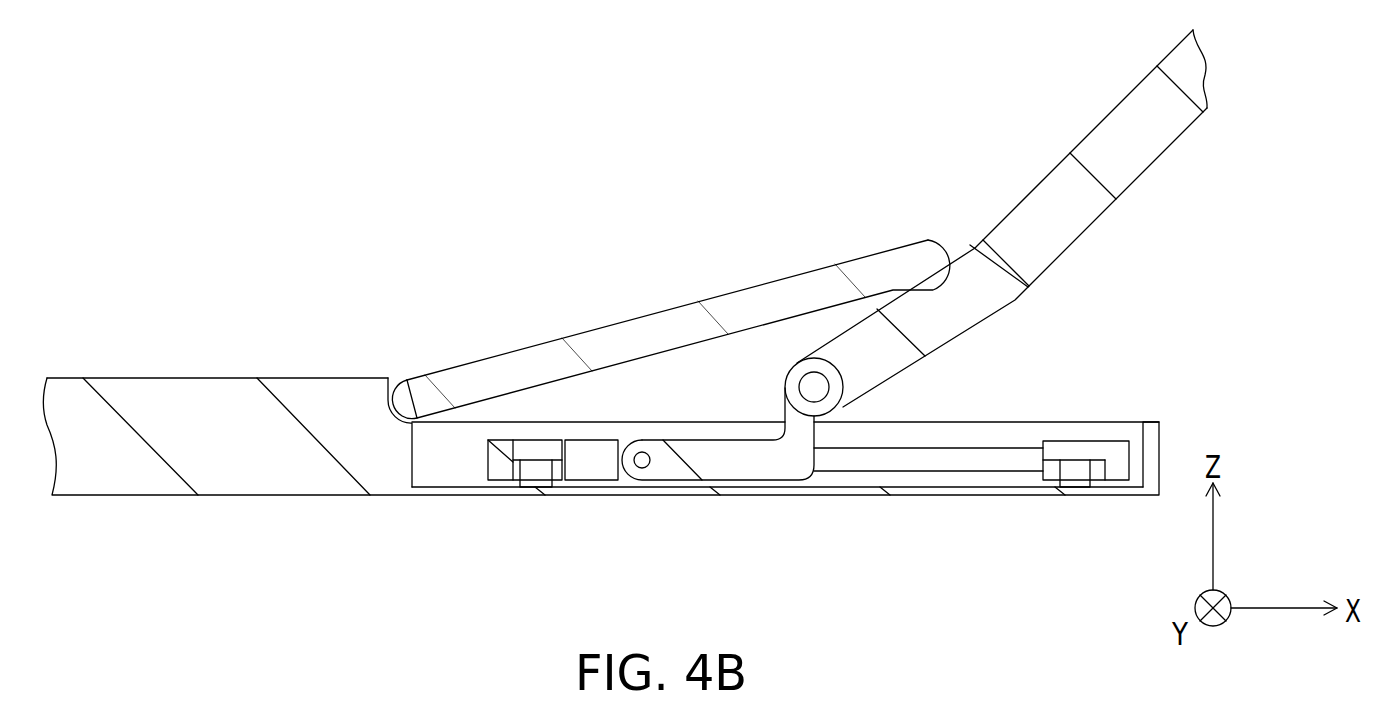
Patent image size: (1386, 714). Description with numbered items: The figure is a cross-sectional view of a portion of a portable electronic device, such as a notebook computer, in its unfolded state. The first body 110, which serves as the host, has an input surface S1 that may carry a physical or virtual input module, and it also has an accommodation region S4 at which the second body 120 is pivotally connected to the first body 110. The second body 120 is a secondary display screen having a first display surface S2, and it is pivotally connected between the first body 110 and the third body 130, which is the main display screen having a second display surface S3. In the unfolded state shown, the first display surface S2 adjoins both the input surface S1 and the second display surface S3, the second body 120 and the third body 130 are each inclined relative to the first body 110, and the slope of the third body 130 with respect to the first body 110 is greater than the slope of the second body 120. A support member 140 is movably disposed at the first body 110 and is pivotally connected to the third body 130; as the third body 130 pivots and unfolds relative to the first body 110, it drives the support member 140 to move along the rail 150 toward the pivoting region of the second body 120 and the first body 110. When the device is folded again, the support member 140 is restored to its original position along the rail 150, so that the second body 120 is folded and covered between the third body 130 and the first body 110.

The first body 110 is at (162, 497).
The second body 120 is at (887, 267).
The third body 130 is at (1140, 180).
The support member 140 is at (757, 465).
The rail 150 is at (917, 482).
The input surface S1 is at (138, 378).
The first display surface S2 is at (612, 323).
The second display surface S3 is at (1092, 132).
The accommodation region S4 is at (1050, 420).